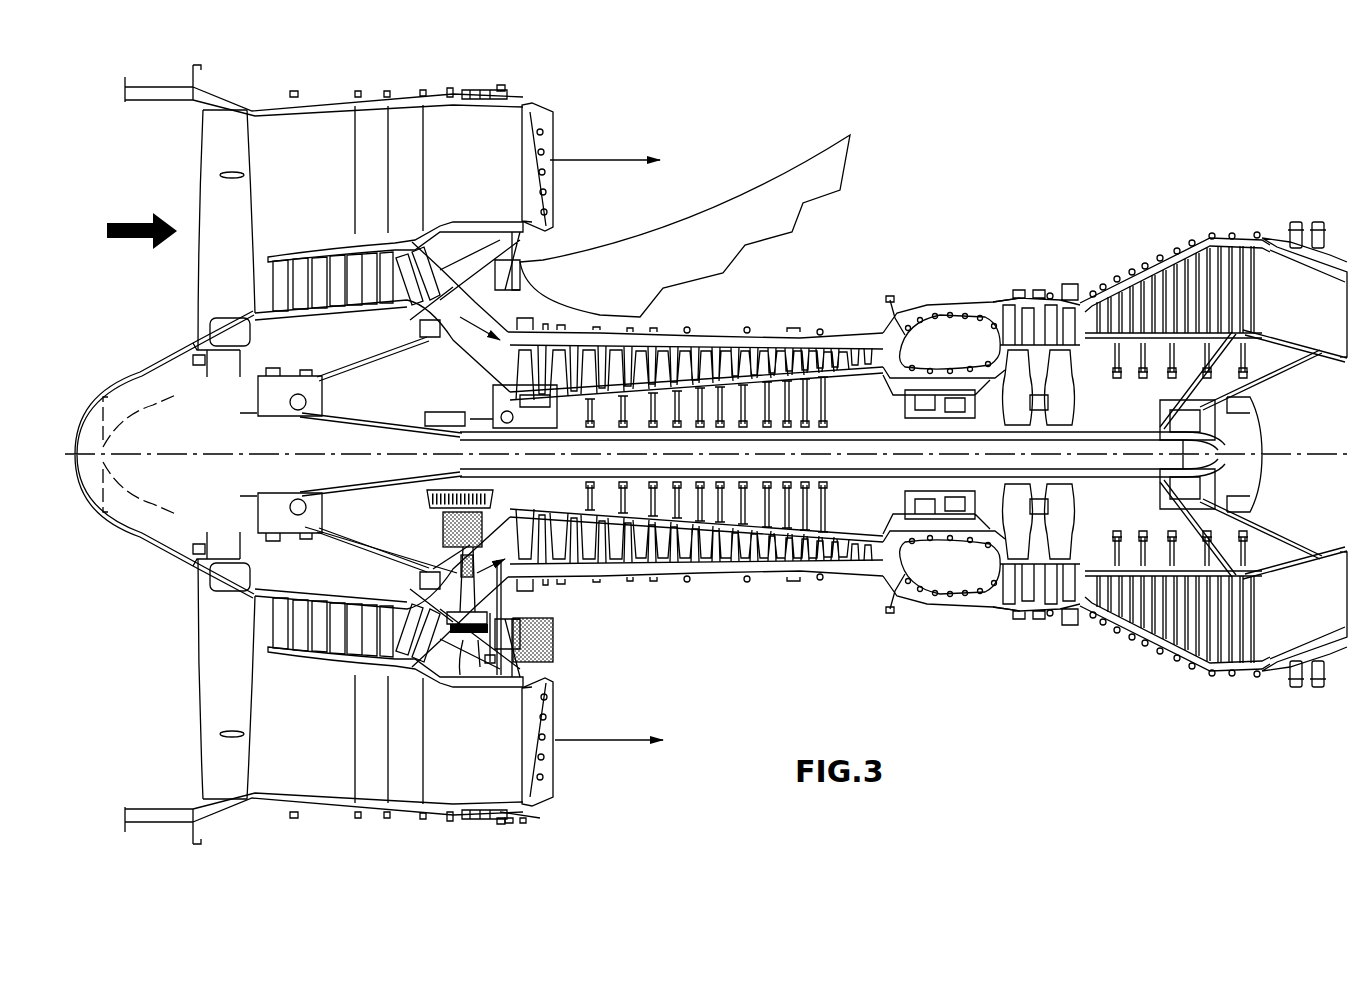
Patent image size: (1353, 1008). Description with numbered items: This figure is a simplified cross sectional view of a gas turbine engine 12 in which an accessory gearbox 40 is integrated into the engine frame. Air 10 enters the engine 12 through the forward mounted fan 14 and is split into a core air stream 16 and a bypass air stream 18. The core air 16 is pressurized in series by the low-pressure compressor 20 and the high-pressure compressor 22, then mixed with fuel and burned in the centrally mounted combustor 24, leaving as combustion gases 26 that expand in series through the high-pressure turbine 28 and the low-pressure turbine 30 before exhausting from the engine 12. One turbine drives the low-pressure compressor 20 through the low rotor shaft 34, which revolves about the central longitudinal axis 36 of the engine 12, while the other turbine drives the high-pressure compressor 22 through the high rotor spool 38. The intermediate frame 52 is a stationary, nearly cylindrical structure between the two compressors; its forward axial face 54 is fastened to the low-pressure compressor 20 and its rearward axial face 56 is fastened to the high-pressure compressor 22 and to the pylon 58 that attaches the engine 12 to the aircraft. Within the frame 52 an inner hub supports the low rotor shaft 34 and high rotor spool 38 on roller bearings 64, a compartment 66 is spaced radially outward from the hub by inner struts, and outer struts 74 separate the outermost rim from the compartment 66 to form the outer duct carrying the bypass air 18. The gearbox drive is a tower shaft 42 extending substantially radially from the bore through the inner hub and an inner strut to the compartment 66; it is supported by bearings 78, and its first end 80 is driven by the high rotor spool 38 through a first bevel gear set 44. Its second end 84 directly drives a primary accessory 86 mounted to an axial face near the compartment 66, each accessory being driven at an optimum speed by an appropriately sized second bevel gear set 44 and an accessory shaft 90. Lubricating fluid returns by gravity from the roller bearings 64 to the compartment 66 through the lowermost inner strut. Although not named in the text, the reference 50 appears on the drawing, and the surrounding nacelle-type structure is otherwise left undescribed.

The air 10 is at (140, 220).
The gas turbine engine 12 is at (180, 637).
The fan 14 is at (200, 175).
The core air stream 16 is at (468, 322).
The bypass air stream 18 is at (592, 160).
The low-pressure compressor 20 is at (318, 238).
The high-pressure compressor 22 is at (732, 322).
The combustor 24 is at (953, 293).
The combustion gases 26 is at (990, 333).
The high-pressure turbine 28 is at (1040, 290).
The low-pressure turbine 30 is at (1190, 230).
The low rotor shaft 34 is at (343, 483).
The central longitudinal axis 36 is at (142, 413).
The high rotor spool 38 is at (875, 416).
The accessory gearbox 40 is at (580, 652).
The tower shaft 42 is at (440, 535).
The bevel gear set 44 is at (440, 502).
The nacelle 50 is at (232, 808).
The intermediate frame 52 is at (503, 818).
The forward axial face 54 is at (423, 733).
The rearward axial face 56 is at (523, 727).
The pylon 58 is at (812, 167).
The roller bearings 64 is at (317, 397).
The compartment 66 is at (478, 667).
The outer struts 74 is at (483, 172).
The bearings 78 is at (442, 552).
The first end 80 is at (452, 524).
The second end 84 is at (462, 612).
The primary accessory 86 is at (540, 647).
The accessory shaft 90 is at (500, 653).